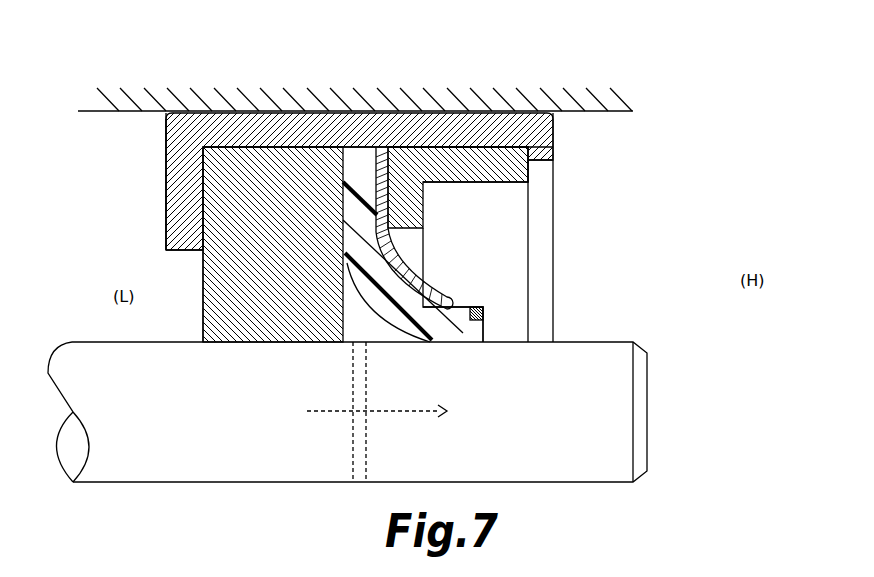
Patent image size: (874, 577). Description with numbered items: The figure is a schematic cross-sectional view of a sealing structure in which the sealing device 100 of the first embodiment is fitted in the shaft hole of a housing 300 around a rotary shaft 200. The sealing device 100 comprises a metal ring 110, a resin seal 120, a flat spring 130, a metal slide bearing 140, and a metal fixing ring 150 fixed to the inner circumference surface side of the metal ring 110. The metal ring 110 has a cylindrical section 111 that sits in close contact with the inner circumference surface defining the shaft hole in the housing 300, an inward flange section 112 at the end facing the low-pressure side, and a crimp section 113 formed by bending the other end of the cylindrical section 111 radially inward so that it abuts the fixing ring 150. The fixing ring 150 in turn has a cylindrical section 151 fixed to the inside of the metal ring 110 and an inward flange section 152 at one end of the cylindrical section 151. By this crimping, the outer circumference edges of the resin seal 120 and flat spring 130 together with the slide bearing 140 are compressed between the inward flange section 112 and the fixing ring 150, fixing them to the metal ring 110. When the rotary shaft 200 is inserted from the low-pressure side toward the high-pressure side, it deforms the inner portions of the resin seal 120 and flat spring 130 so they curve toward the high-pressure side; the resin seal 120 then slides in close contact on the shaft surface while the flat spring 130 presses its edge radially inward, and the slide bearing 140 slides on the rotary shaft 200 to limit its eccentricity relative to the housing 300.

The sealing device 100 is at (129, 227).
The metal ring 110 is at (390, 111).
The cylindrical section 111 is at (450, 122).
The inward flange section 112 is at (167, 167).
The crimp section 113 is at (553, 150).
The resin seal 120 is at (478, 345).
The flat spring 130 is at (412, 270).
The slide bearing 140 is at (215, 273).
The fixing ring 150 is at (464, 189).
The cylindrical section 151 is at (530, 165).
The inward flange section 152 is at (425, 218).
The rotary shaft 200 is at (347, 412).
The housing 300 is at (355, 90).